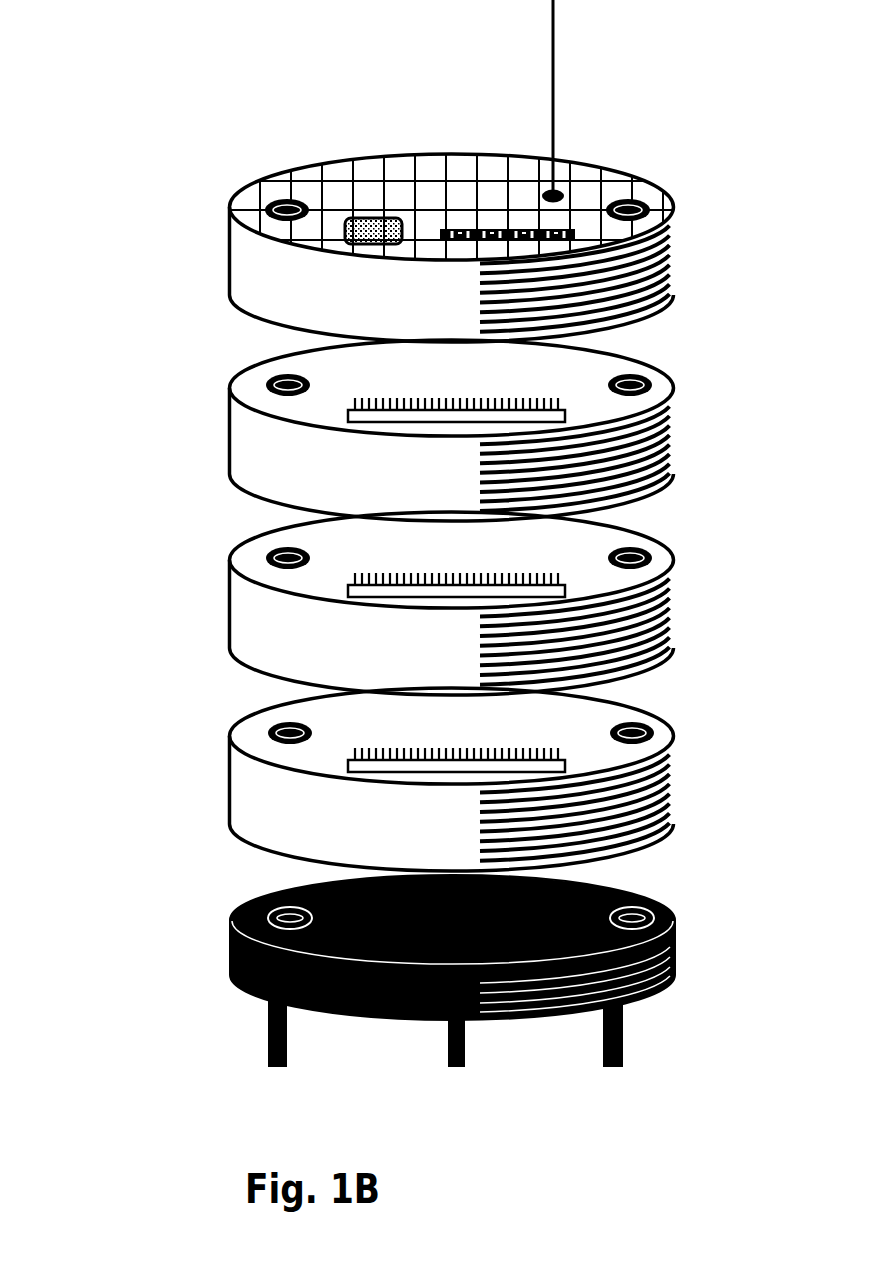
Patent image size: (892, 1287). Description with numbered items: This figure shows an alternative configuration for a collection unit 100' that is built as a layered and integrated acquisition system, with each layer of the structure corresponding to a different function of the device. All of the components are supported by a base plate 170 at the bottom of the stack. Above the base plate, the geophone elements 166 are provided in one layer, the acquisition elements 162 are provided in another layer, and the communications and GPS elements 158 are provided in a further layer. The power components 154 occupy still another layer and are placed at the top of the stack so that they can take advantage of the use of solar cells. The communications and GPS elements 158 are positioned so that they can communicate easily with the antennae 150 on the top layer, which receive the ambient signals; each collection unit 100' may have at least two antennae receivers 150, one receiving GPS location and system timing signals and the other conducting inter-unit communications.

The collection unit 100' is at (430, 533).
The antennae 150 is at (545, 59).
The power components 154 is at (229, 289).
The communications and GPS elements 158 is at (229, 457).
The acquisition elements 162 is at (229, 634).
The geophone elements 166 is at (229, 817).
The base plate 170 is at (231, 968).